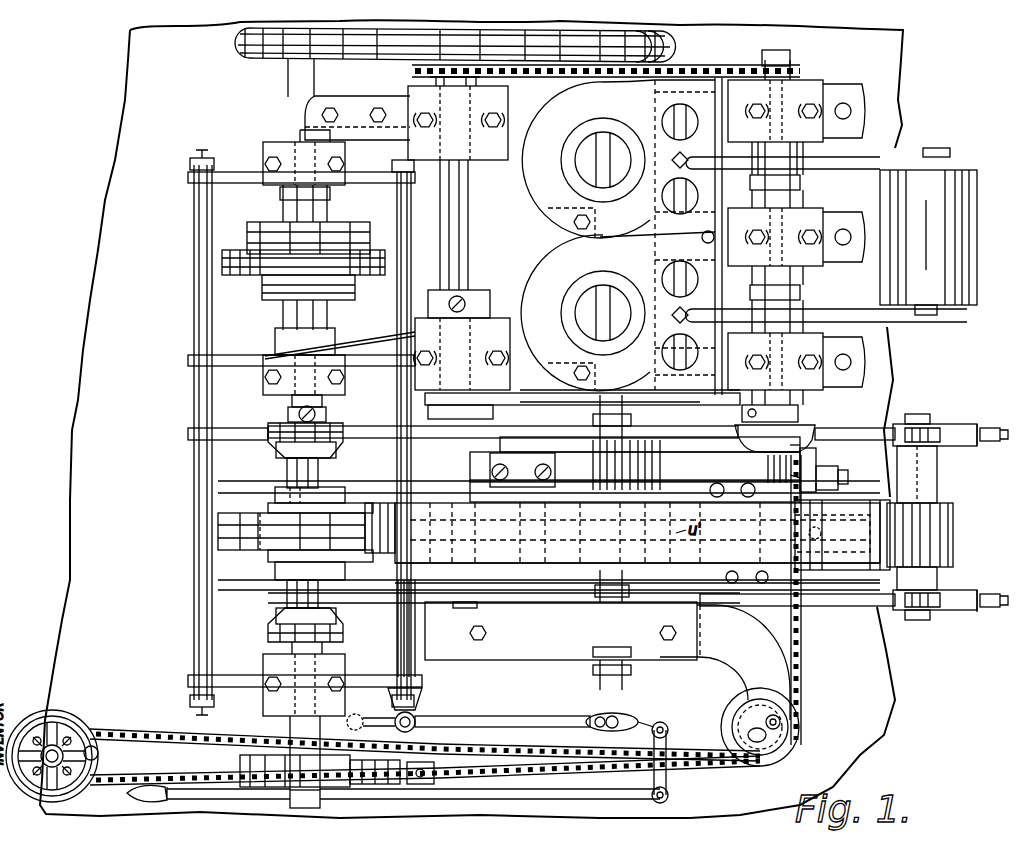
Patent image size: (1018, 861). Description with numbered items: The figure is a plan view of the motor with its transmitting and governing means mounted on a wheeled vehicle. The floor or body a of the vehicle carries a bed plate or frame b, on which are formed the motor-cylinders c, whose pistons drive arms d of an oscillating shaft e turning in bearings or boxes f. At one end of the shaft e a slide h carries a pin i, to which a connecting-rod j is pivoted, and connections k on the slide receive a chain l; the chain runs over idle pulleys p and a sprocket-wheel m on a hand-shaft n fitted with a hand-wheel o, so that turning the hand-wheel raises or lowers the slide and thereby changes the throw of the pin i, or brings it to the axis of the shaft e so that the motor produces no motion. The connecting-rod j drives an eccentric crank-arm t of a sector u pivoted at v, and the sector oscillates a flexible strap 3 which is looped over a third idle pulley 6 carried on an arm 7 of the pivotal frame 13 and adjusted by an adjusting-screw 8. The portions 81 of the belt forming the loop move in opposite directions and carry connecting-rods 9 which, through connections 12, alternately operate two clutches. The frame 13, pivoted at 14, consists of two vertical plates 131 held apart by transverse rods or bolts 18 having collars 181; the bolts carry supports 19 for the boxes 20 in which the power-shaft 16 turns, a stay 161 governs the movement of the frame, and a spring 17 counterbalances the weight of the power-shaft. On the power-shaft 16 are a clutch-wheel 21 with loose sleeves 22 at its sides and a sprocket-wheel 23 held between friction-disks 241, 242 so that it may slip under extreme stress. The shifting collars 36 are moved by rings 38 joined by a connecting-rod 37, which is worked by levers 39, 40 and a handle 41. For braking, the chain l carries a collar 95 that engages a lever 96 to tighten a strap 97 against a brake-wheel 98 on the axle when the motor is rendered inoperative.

The connecting-rod 37 is at (238, 48).
The transverse horizontal rods or bolts 18 is at (395, 160).
The supports 19 is at (240, 183).
The friction-disk 242 is at (247, 232).
The sprocket-wheel 23 is at (222, 265).
The friction-disk 241 is at (262, 290).
The collars 181 is at (196, 322).
The boxes 20 is at (330, 186).
The stay 161 is at (345, 340).
The power-shaft 16 is at (290, 406).
The rings 38 is at (270, 428).
The collars 36 is at (276, 448).
The loose sleeve 22 is at (287, 470).
The connections 12 is at (276, 497).
The clutch-wheel 21 is at (225, 540).
The pivotal frame 13 is at (196, 518).
The vertical plates 131 is at (365, 427).
The connecting-rods 9 is at (820, 423).
The arm 7 is at (856, 436).
The adjusting-screw 8 is at (992, 444).
The spring 17 is at (920, 490).
The idle pulley 6 is at (945, 503).
The strap 3 is at (842, 535).
The portions of the belt 81 is at (868, 535).
The pivot 14 is at (598, 472).
The lever 39 is at (524, 718).
The lever 40 is at (670, 762).
The handle 41 is at (134, 800).
The brake-wheel 98 is at (242, 756).
The strap 97 is at (242, 766).
The lever 96 is at (322, 792).
The collar 95 is at (435, 781).
The floor or body a is at (103, 435).
The bed plate or frame b is at (582, 248).
The motor-cylinders c is at (585, 236).
The arms d is at (694, 237).
The oscillating shaft e is at (805, 180).
The bearings or boxes f is at (815, 90).
The slide h is at (802, 443).
The connections k is at (816, 460).
The idle pulleys p is at (803, 485).
The pin i is at (766, 470).
The connecting-rod j is at (726, 476).
The chain l is at (148, 748).
The sprocket-wheel m is at (94, 746).
The hand-shaft n is at (62, 746).
The hand-wheel o is at (55, 726).
The eccentric crank-arm t is at (635, 469).
The sector u is at (548, 526).
The pivot v is at (540, 553).